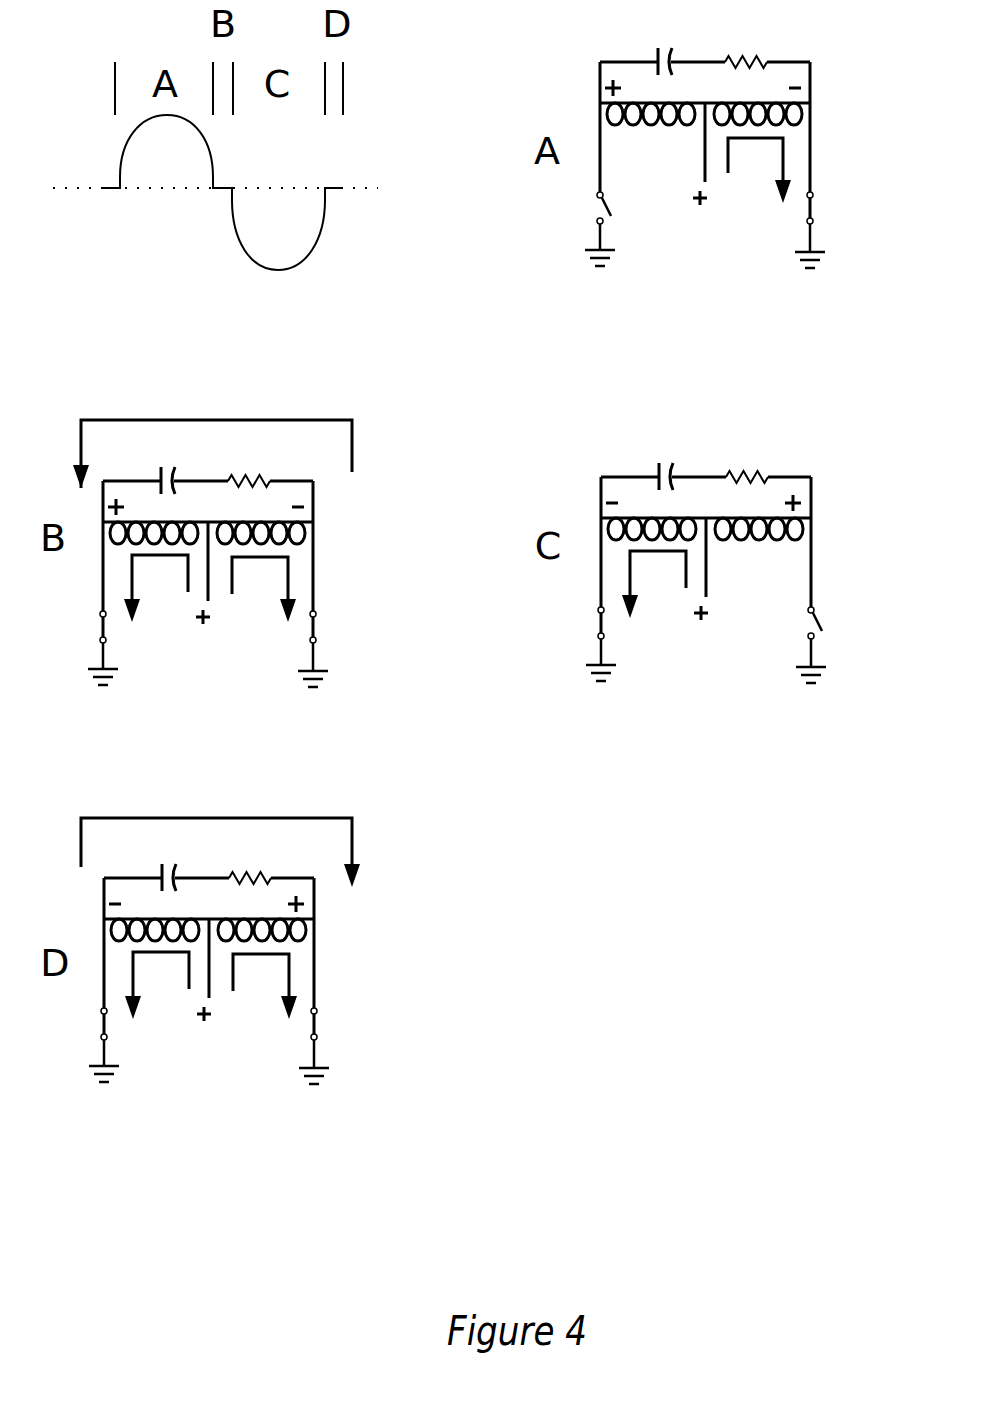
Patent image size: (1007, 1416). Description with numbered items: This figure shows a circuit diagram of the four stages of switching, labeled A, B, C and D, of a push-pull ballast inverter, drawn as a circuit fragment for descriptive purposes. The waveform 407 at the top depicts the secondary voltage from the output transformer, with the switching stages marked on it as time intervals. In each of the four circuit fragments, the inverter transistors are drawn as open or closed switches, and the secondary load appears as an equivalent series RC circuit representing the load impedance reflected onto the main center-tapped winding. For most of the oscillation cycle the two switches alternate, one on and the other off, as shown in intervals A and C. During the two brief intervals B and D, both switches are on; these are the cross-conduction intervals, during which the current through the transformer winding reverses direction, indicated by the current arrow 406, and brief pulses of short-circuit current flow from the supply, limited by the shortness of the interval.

The current flow arrow 406 is at (759, 170).
The waveform 407 is at (245, 248).